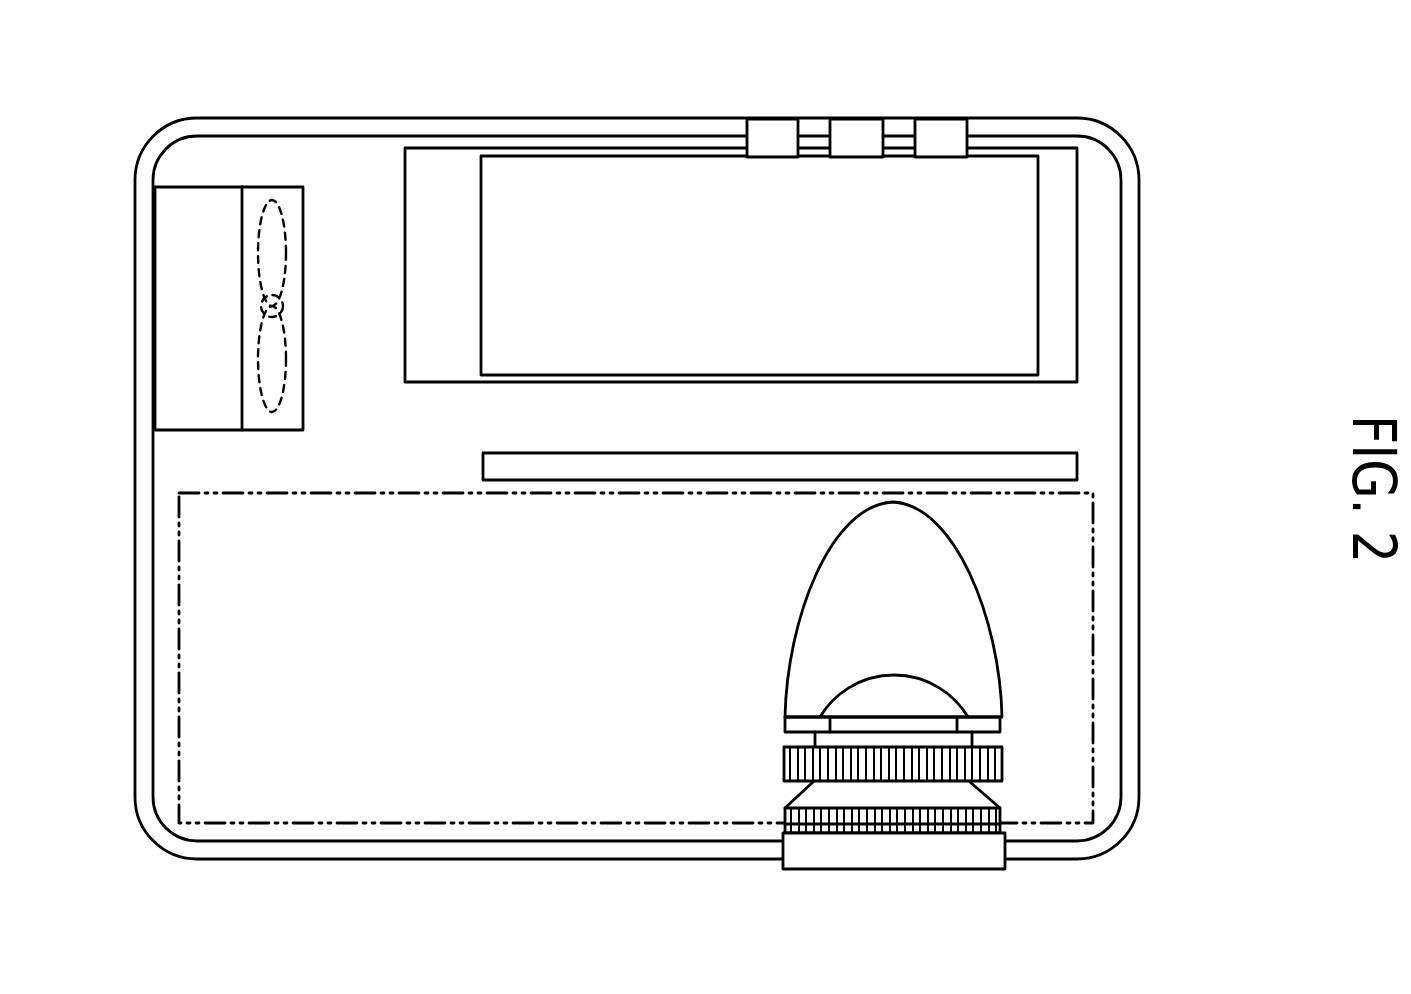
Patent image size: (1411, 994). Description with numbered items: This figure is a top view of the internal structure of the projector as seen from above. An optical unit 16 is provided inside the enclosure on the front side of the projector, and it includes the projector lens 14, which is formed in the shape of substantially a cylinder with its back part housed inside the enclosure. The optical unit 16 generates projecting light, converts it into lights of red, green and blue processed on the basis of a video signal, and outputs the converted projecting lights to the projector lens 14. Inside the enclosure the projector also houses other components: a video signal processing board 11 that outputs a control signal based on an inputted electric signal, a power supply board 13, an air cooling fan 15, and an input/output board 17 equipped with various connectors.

The video signal processing board 11 is at (1077, 462).
The power supply board 13 is at (405, 222).
The projector lens 14 is at (990, 640).
The air cooling fan 15 is at (272, 200).
The optical unit 16 is at (420, 823).
The input/output board 17 is at (1038, 245).